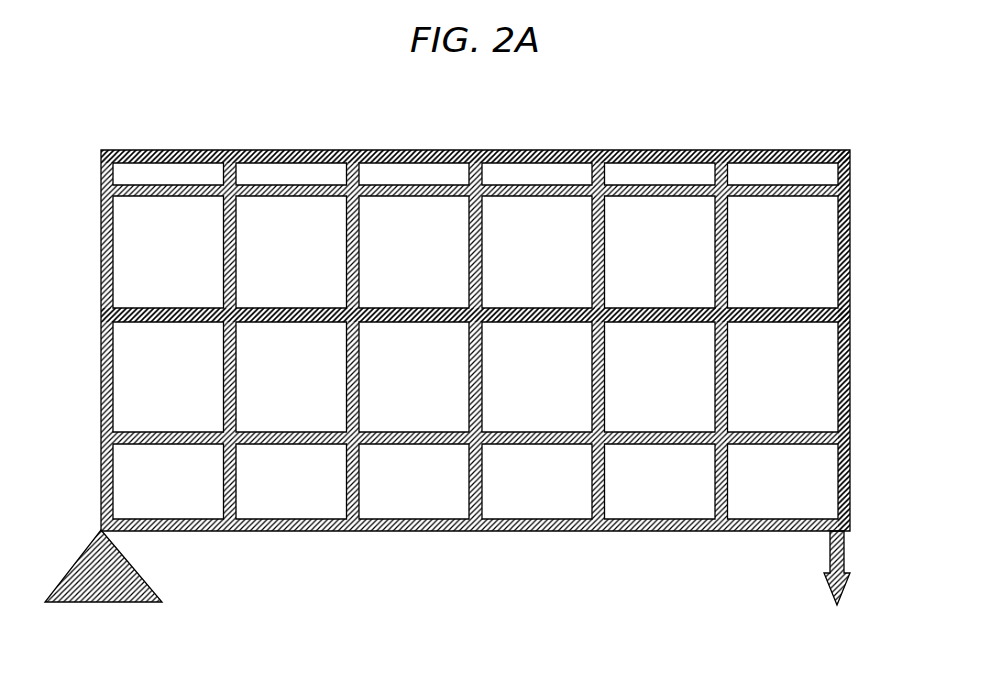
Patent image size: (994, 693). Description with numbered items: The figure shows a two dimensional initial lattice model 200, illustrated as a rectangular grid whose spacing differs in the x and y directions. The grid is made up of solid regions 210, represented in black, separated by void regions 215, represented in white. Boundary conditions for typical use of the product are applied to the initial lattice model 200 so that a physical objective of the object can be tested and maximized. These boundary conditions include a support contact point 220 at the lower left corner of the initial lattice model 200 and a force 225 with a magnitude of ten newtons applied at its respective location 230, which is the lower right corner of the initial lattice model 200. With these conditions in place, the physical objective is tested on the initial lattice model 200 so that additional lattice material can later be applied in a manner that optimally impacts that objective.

The initial lattice model 200 is at (193, 97).
The solid regions 210 is at (298, 307).
The void regions 215 is at (294, 177).
The support contact point 220 is at (100, 528).
The force 225 is at (830, 555).
The location 230 is at (850, 528).